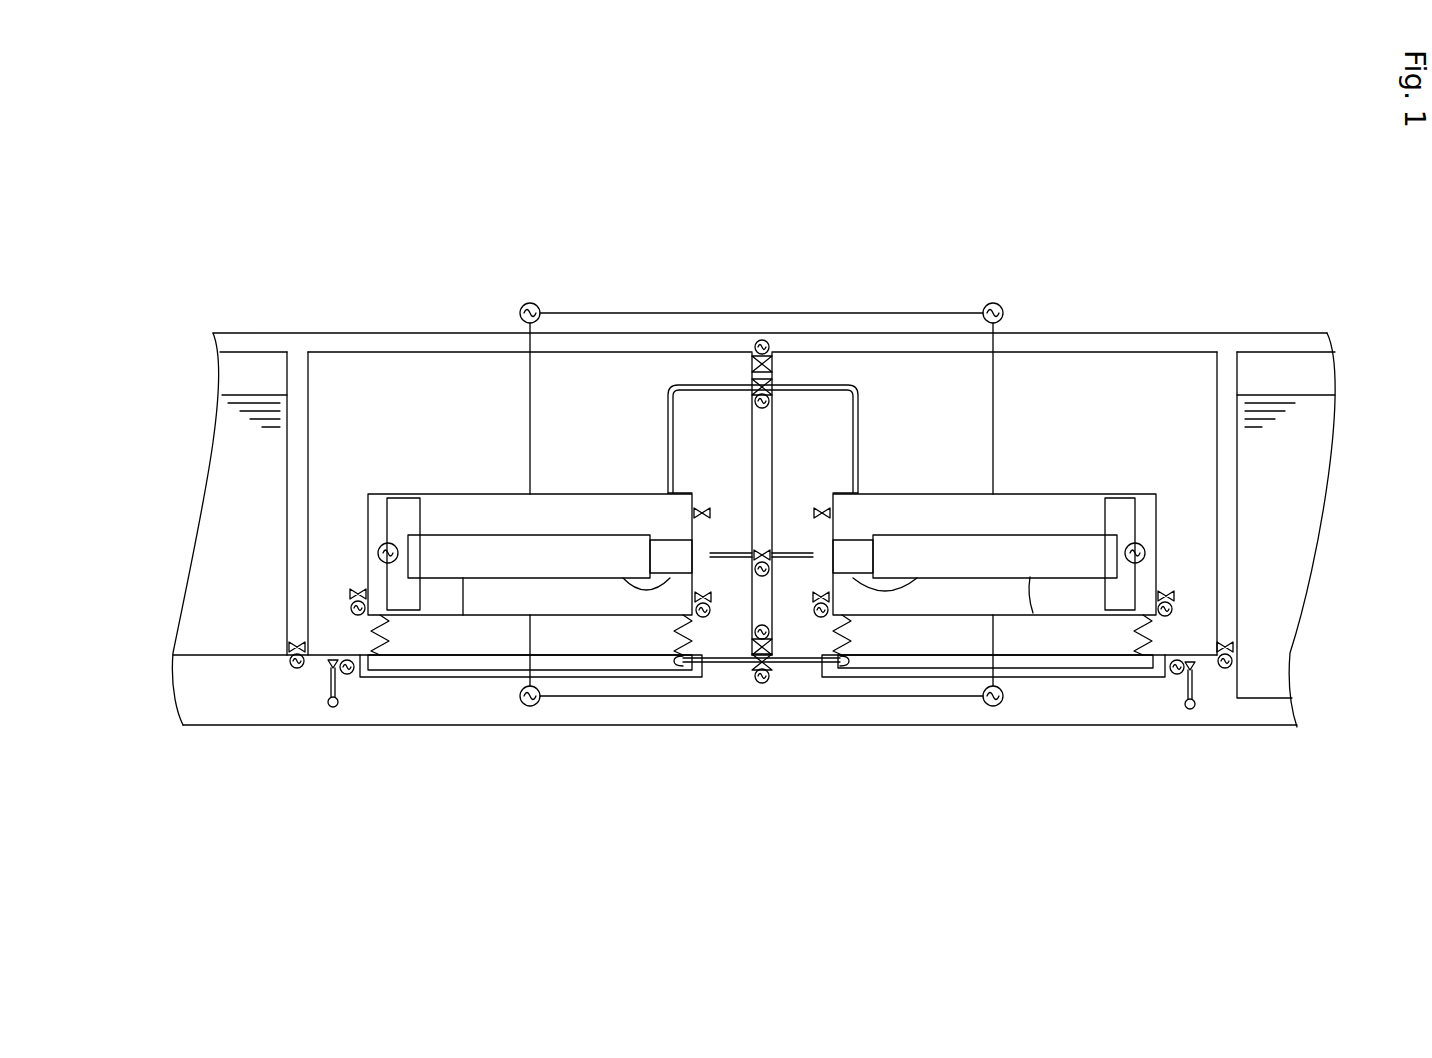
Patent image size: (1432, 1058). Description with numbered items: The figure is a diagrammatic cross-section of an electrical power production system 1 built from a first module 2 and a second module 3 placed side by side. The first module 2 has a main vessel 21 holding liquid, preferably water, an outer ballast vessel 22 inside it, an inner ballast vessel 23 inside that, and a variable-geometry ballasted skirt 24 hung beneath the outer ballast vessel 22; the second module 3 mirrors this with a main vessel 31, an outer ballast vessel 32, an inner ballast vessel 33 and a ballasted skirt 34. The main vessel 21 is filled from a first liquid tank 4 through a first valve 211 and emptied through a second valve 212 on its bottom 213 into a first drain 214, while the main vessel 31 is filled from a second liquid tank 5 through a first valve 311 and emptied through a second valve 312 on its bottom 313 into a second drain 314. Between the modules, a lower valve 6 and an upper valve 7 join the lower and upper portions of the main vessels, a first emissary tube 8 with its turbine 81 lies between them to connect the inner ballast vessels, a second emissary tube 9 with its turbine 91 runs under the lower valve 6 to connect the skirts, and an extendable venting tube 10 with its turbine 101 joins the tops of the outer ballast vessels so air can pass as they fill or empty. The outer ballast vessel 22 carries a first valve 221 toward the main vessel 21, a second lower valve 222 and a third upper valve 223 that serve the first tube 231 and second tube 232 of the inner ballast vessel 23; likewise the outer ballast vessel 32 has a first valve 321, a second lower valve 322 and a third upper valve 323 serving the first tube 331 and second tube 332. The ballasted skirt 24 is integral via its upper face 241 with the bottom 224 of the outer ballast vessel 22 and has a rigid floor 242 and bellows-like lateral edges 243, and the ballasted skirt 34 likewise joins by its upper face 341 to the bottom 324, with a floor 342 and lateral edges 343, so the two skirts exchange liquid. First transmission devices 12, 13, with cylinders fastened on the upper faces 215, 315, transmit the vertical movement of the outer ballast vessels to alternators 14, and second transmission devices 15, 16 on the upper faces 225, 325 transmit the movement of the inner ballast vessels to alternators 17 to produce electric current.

The electrical power production system 1 is at (853, 208).
The first module 2 is at (410, 264).
The second module 3 is at (1101, 264).
The first liquid tank 4 is at (240, 368).
The second liquid tank 5 is at (1277, 362).
The lower valve 6 is at (752, 660).
The upper valve 7 is at (752, 348).
The first emissary tube 8 is at (752, 553).
The turbine 81 is at (772, 553).
The second emissary tube 9 is at (728, 665).
The turbine 91 is at (777, 665).
The extendable venting tube 10 is at (795, 380).
The turbine 101 is at (772, 398).
The first transmission device 12 is at (528, 383).
The first transmission device 13 is at (996, 385).
The alternator 14 is at (535, 304).
The second transmission device 15 is at (387, 510).
The second transmission device 16 is at (1147, 510).
The alternator 17 is at (378, 553).
The main vessel 21 is at (325, 372).
The upper face 215 is at (385, 350).
The outer ballast vessel 22 is at (500, 493).
The first valve 221 is at (348, 595).
The second lower valve 222 is at (712, 612).
The third upper valve 223 is at (705, 508).
The bottom 224 is at (463, 535).
The upper face 225 is at (387, 497).
The inner ballast vessel 23 is at (607, 535).
The first tube 231 is at (590, 535).
The second tube 232 is at (670, 532).
The ballasted skirt 24 is at (437, 642).
The upper face 241 is at (602, 617).
The floor 242 is at (572, 665).
The lateral edges 243 is at (388, 645).
The first valve 211 is at (328, 672).
The second valve 212 is at (291, 664).
The bottom 213 is at (289, 645).
The first drain 214 is at (342, 673).
The main vessel 31 is at (1180, 378).
The upper face 315 is at (1120, 350).
The outer ballast vessel 32 is at (1020, 493).
The first valve 321 is at (1177, 597).
The second lower valve 322 is at (793, 612).
The third upper valve 323 is at (822, 508).
The bottom 324 is at (1050, 535).
The upper face 325 is at (1137, 497).
The inner ballast vessel 33 is at (928, 535).
The first tube 331 is at (938, 535).
The second tube 332 is at (855, 532).
The ballasted skirt 34 is at (1055, 643).
The upper face 341 is at (917, 617).
The floor 342 is at (935, 660).
The lateral edges 343 is at (1137, 645).
The first valve 311 is at (1235, 648).
The second valve 312 is at (1200, 706).
The bottom 313 is at (1172, 658).
The second drain 314 is at (1195, 690).